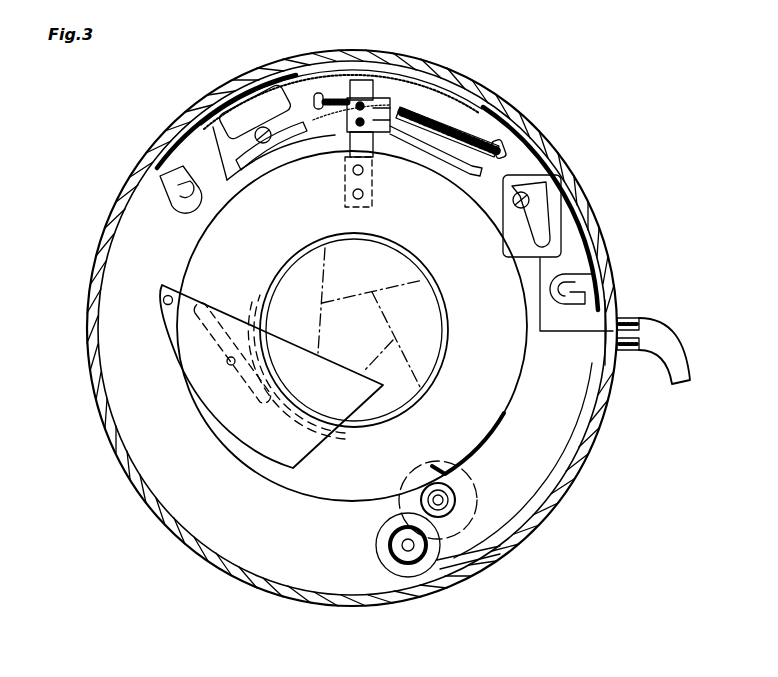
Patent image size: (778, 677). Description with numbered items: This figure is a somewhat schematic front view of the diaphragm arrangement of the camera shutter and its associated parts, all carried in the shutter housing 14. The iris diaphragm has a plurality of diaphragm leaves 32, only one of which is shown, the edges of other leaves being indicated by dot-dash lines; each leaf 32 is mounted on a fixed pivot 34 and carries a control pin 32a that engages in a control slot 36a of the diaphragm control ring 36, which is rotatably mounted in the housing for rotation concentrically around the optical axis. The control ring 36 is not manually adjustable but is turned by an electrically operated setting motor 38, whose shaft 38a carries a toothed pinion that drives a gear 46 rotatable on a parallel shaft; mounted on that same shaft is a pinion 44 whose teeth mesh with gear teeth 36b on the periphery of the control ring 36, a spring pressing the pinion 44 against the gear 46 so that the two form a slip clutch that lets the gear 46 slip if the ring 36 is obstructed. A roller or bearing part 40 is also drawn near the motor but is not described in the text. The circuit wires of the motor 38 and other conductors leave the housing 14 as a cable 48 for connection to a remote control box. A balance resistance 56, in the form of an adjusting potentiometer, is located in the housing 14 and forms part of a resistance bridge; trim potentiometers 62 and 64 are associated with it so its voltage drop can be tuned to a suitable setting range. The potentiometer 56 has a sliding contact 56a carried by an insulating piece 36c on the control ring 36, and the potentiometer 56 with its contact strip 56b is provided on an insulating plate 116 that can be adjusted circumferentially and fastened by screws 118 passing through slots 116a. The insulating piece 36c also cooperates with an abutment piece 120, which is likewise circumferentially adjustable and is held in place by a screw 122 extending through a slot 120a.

The shutter housing 14 is at (104, 434).
The diaphragm leaf 32 is at (314, 448).
The control pin 32a is at (229, 365).
The fixed pivot 34 is at (168, 293).
The diaphragm control ring 36 is at (272, 478).
The control slot 36a is at (239, 372).
The gear teeth 36b is at (502, 422).
The insulating piece 36c is at (364, 82).
The setting motor 38 is at (376, 548).
The motor shaft 38a is at (412, 553).
The roller bearing 40 is at (404, 550).
The pinion 44 is at (456, 500).
The gear 46 is at (470, 480).
The cable 48 is at (658, 358).
The balance resistance 56 is at (470, 130).
The sliding contact 56a is at (404, 112).
The contact strip 56b is at (437, 142).
The trim potentiometer 62 is at (580, 274).
The trim potentiometer 64 is at (162, 190).
The insulating plate 116 is at (554, 240).
The slot 116a is at (250, 155).
The screw 118 is at (270, 142).
The abutment piece 120 is at (281, 86).
The slot 120a is at (262, 92).
The screw 122 is at (234, 104).